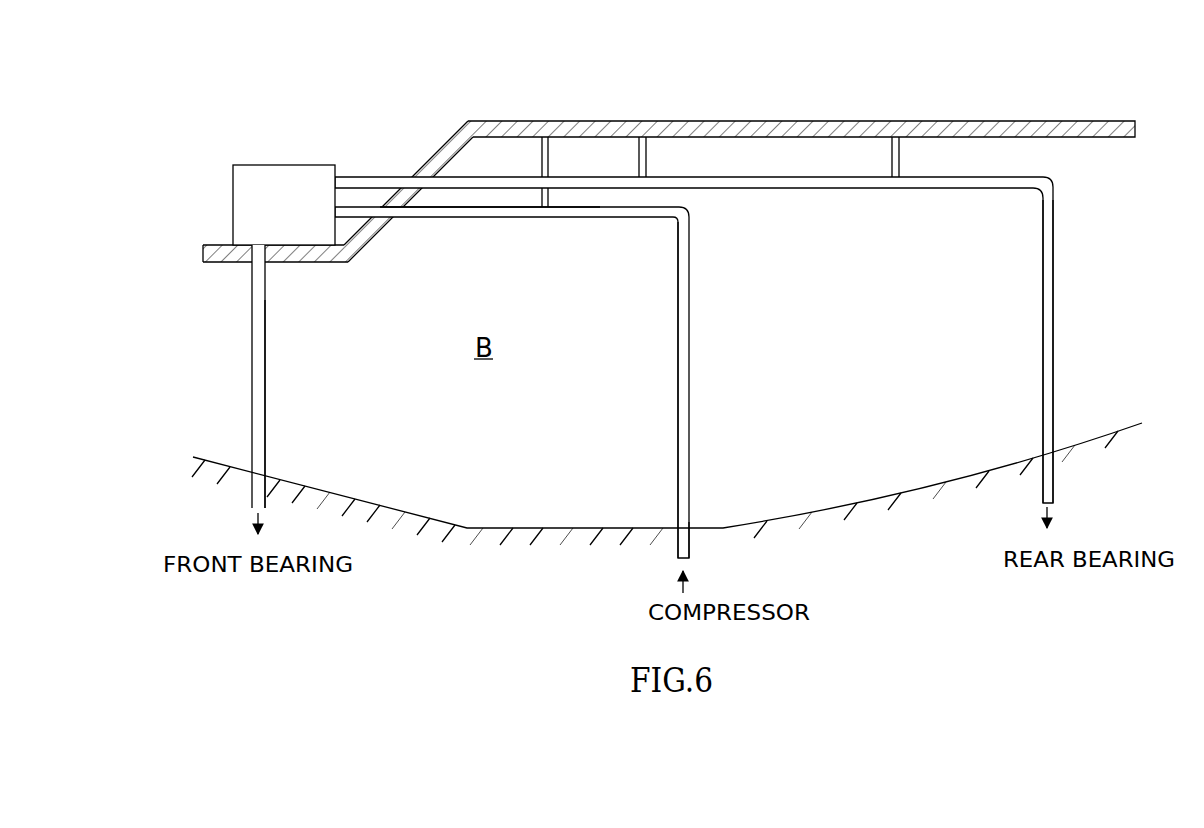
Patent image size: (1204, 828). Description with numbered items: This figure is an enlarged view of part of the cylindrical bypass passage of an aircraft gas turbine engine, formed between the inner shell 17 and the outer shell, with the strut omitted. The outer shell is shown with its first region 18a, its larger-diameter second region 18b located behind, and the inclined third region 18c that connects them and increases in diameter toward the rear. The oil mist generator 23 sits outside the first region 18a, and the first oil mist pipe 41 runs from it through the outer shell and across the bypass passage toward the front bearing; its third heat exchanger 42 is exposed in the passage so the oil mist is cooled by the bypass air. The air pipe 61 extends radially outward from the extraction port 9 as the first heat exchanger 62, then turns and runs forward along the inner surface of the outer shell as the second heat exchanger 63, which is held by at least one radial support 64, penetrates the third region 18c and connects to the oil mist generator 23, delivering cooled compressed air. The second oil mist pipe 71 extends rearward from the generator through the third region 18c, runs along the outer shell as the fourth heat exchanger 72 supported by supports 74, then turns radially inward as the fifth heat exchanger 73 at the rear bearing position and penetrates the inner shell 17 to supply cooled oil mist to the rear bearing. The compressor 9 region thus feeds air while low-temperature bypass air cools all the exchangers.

The extraction port 9 is at (693, 523).
The inner shell 17 is at (1103, 435).
The first region 18a is at (220, 245).
The second region 18b is at (758, 121).
The third region 18c is at (427, 158).
The oil mist generator 23 is at (280, 165).
The first oil mist pipe 41 is at (245, 362).
The third heat exchanger 42 is at (250, 411).
The air pipe 61 is at (662, 384).
The first heat exchanger 62 is at (677, 442).
The second heat exchanger 63 is at (483, 207).
The support 64 is at (549, 160).
The second oil mist pipe 71 is at (1027, 328).
The fourth heat exchanger 72 is at (820, 177).
The fifth heat exchanger 73 is at (1038, 383).
The support 74 is at (647, 160).